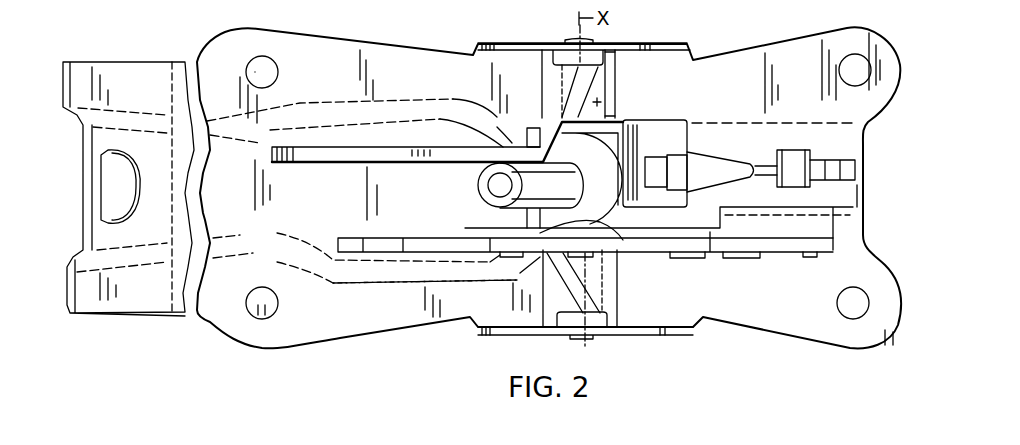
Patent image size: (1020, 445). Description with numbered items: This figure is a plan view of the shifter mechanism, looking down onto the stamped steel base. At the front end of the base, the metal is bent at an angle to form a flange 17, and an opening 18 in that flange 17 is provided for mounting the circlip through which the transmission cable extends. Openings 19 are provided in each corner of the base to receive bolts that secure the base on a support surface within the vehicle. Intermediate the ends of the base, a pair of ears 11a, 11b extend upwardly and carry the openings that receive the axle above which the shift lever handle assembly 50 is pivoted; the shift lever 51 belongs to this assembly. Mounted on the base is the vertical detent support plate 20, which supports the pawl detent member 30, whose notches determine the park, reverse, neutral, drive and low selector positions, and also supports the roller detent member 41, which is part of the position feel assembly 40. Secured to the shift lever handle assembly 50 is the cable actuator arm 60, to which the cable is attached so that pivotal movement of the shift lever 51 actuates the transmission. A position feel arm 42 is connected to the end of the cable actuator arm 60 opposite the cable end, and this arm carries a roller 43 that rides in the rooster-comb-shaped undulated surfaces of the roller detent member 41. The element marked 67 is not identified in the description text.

The ear 11a is at (690, 328).
The ear 11b is at (655, 44).
The flange 17 is at (132, 63).
The opening 18 is at (125, 181).
The openings 19 is at (255, 58).
The detent support plate 20 is at (420, 271).
The pawl detent member 30 is at (712, 236).
The position feel assembly 40 is at (784, 116).
The roller detent member 41 is at (852, 221).
The position feel arm 42 is at (715, 163).
The roller 43 is at (838, 162).
The shift lever handle assembly 50 is at (620, 240).
The shift lever 51 is at (478, 181).
The cable actuator arm 60 is at (412, 164).
The post 67 is at (610, 100).